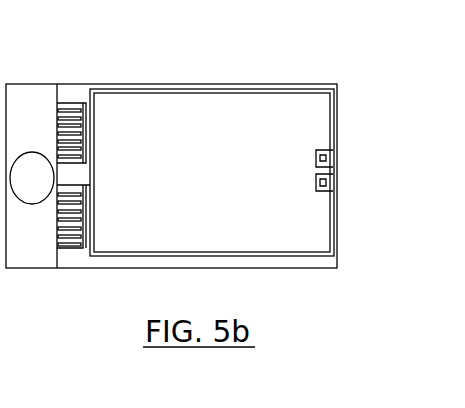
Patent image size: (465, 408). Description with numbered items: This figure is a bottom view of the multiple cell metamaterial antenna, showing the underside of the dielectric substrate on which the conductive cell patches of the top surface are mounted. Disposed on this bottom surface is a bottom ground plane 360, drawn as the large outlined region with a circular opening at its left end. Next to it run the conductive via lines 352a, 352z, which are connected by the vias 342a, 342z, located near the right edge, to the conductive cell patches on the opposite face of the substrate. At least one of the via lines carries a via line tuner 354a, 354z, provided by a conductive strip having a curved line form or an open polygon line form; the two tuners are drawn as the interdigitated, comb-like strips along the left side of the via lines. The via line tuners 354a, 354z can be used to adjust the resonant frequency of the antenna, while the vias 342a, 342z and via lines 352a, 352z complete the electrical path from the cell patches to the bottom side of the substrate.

The bottom ground plane 360 is at (28, 127).
The conductive via line 352a is at (188, 93).
The conductive via line 352z is at (238, 237).
The via line tuner 354a is at (78, 103).
The via line tuner 354z is at (75, 203).
The via 342a is at (322, 152).
The via 342z is at (325, 173).